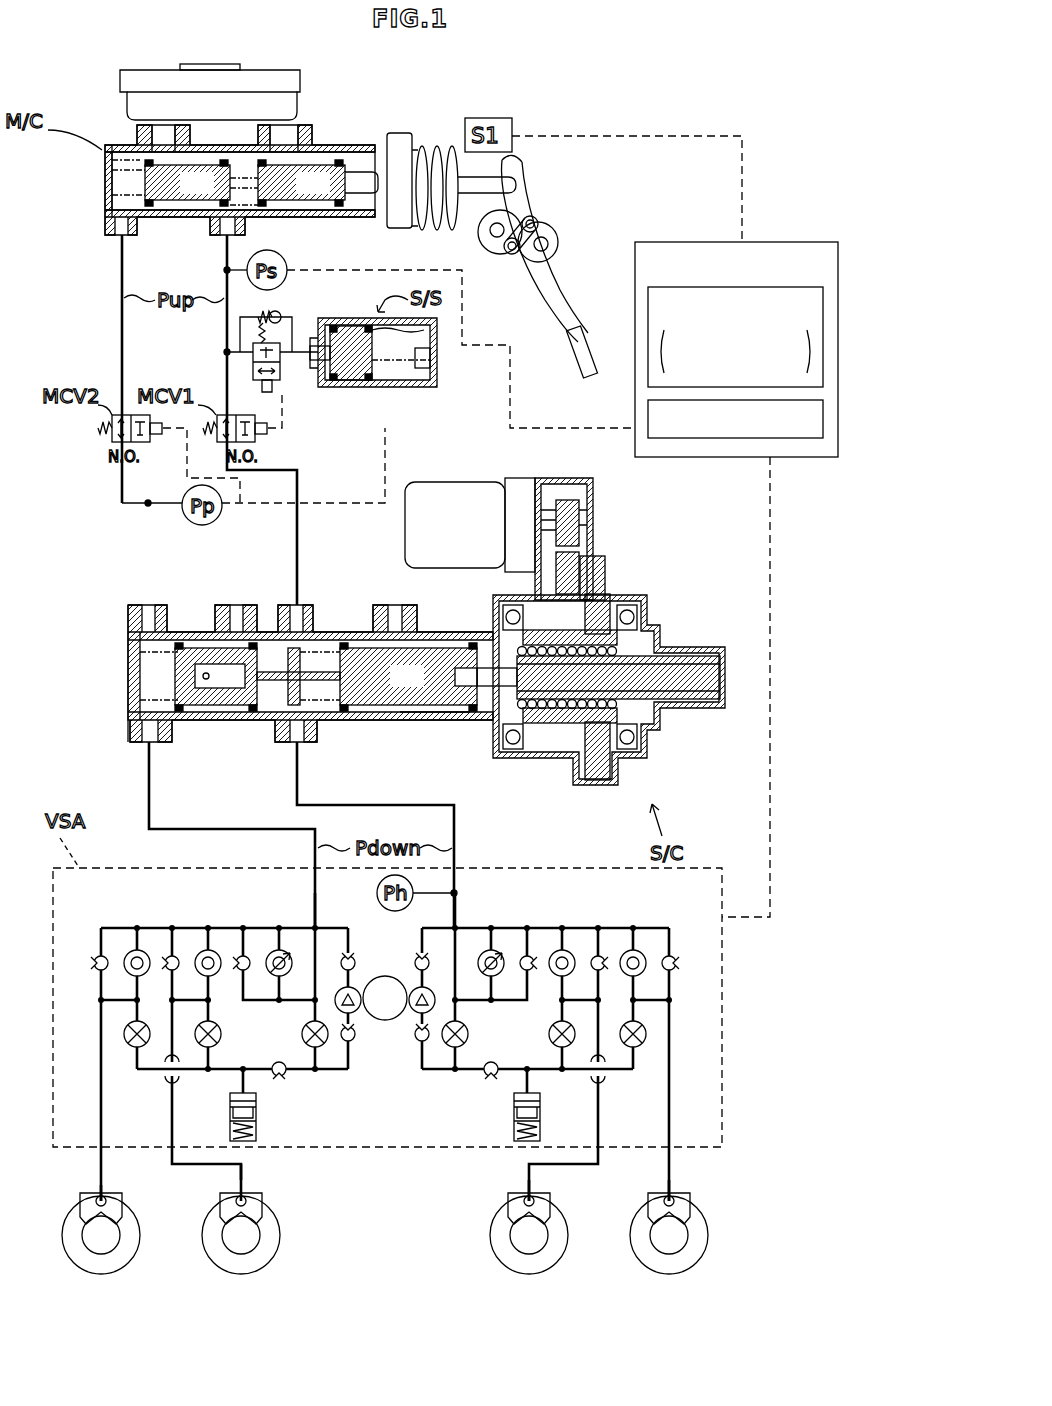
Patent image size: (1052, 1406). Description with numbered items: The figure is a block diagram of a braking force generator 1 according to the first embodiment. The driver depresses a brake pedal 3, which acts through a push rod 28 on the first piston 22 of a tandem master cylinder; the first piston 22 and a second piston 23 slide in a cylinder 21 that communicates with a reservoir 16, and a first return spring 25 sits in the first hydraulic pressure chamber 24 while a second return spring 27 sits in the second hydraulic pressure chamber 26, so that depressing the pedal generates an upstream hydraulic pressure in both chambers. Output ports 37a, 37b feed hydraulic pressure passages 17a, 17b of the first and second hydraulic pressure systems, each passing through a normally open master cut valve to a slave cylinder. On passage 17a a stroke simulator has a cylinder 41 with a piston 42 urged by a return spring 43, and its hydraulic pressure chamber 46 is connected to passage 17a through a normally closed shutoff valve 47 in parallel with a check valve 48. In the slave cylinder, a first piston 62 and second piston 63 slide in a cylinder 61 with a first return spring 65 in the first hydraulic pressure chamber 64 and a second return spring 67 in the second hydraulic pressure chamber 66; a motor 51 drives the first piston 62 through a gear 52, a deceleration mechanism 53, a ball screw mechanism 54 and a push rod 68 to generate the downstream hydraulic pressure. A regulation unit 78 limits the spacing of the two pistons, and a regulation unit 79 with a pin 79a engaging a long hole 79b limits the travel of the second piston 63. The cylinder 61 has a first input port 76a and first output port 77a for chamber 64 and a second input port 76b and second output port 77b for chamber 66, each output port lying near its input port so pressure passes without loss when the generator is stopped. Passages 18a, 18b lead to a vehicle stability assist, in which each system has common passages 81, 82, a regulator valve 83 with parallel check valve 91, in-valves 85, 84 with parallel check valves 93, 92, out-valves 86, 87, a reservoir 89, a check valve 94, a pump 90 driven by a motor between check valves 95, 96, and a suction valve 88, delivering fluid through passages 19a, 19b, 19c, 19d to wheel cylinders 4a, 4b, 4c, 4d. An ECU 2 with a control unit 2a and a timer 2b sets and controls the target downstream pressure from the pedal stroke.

The braking force generator 1 is at (648, 95).
The ECU 2 is at (678, 241).
The control unit (conditional stop unit) 2a is at (778, 286).
The timer 2b is at (730, 440).
The brake pedal 3 is at (580, 335).
The wheel cylinder 4a is at (634, 1206).
The wheel cylinder 4b is at (494, 1206).
The wheel cylinder 4c is at (279, 1198).
The wheel cylinder 4d is at (139, 1198).
The reservoir 16 is at (128, 96).
The hydraulic pressure passage (first hydraulic pressure system) 17a is at (227, 378).
The hydraulic pressure passage (second hydraulic pressure system) 17b is at (122, 332).
The hydraulic pressure passage (first hydraulic pressure system) 18a is at (456, 834).
The hydraulic pressure passage (second hydraulic pressure system) 18b is at (220, 834).
The hydraulic pressure passage 19a is at (669, 1185).
The hydraulic pressure passage 19b is at (529, 1185).
The hydraulic pressure passage 19c is at (241, 1170).
The hydraulic pressure passage 19d is at (101, 1185).
The cylinder 21 is at (325, 142).
The first piston 22 is at (287, 183).
The second piston 23 is at (187, 183).
The first hydraulic pressure chamber 24 is at (253, 160).
The first return spring 25 is at (292, 218).
The second hydraulic pressure chamber 26 is at (126, 132).
The second return spring 27 is at (118, 160).
The push rod 28 is at (372, 175).
The output port 37a is at (245, 216).
The output port 37b is at (120, 222).
The cylinder 41 is at (428, 388).
The piston 42 is at (352, 380).
The return spring 43 is at (430, 368).
The hydraulic pressure chamber 46 is at (314, 380).
The shutoff valve (PFSV) 47 is at (290, 378).
The check valve 48 is at (283, 310).
The motor 51 is at (445, 482).
The gear 52 is at (575, 500).
The deceleration mechanism 53 is at (597, 562).
The ball screw mechanism 54 is at (664, 603).
The cylinder 61 is at (480, 740).
The first piston (slave piston) 62 is at (420, 688).
The second piston (slave piston) 63 is at (262, 660).
The first hydraulic pressure chamber 64 is at (336, 655).
The first return spring 65 is at (322, 712).
The second hydraulic pressure chamber 66 is at (138, 648).
The second return spring 67 is at (138, 702).
The push rod 68 is at (700, 652).
The first input port 76a is at (306, 628).
The second input port 76b is at (130, 620).
The first output port 77a is at (298, 742).
The second output port 77b is at (132, 730).
The regulation unit 78 is at (420, 722).
The regulation unit 79 is at (208, 706).
The pin 79a is at (192, 676).
The long hole 79b is at (232, 690).
The hydraulic pressure passage 81 is at (192, 926).
The hydraulic pressure passage 82 is at (185, 1070).
The regulator valve 83 is at (285, 950).
The in-valve 84 is at (216, 950).
The in-valve 85 is at (127, 950).
The out-valve 86 is at (128, 1048).
The out-valve 87 is at (221, 1044).
The suction valve 88 is at (303, 1030).
The reservoir 89 is at (257, 1128).
The pump 90 is at (362, 1018).
The check valve 91 is at (252, 952).
The check valve 92 is at (146, 950).
The check valve 93 is at (101, 955).
The check valve 94 is at (276, 1076).
The check valve 95 is at (412, 1048).
The check valve 96 is at (358, 955).